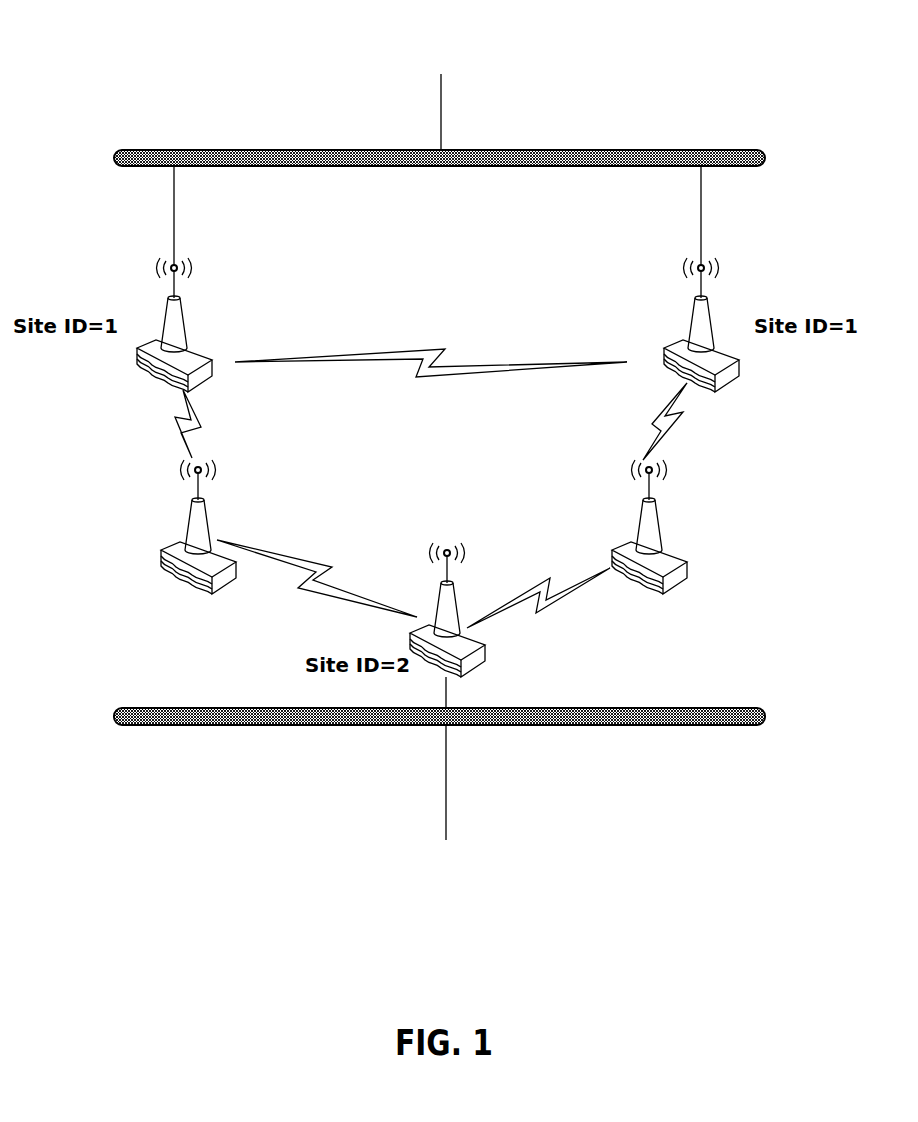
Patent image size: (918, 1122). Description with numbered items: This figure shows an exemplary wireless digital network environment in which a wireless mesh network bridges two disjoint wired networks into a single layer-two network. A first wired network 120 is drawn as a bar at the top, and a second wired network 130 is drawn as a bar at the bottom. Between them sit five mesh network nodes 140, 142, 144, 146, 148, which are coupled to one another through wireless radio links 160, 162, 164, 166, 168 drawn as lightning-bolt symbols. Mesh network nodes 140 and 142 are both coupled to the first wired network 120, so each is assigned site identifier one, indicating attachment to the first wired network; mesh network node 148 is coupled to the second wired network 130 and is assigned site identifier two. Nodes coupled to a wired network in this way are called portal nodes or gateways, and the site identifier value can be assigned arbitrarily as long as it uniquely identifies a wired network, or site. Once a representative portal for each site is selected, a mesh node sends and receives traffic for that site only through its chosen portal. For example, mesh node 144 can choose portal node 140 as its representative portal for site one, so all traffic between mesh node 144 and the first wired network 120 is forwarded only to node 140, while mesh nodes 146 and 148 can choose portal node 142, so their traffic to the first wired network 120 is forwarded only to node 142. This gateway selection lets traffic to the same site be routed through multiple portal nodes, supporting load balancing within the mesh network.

The wired network 1 120 is at (535, 44).
The wired network 2 130 is at (535, 872).
The mesh network node 140 is at (187, 320).
The mesh network node 142 is at (688, 327).
The mesh network node 144 is at (210, 510).
The mesh network node 146 is at (665, 537).
The mesh network node 148 is at (458, 588).
The wireless radio link 160 is at (458, 340).
The wireless radio link 162 is at (165, 432).
The wireless radio link 164 is at (721, 436).
The wireless radio link 166 is at (343, 558).
The wireless radio link 168 is at (579, 642).